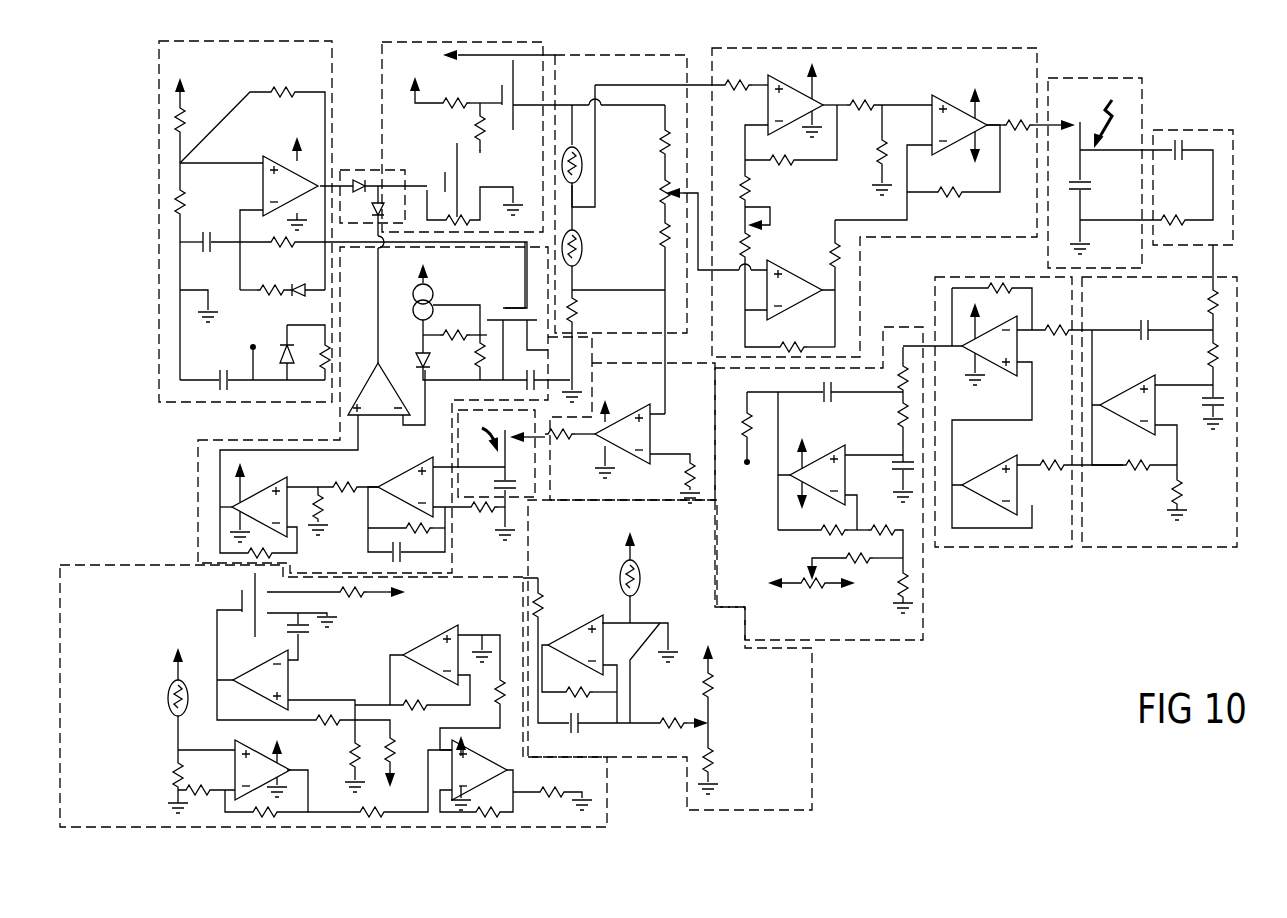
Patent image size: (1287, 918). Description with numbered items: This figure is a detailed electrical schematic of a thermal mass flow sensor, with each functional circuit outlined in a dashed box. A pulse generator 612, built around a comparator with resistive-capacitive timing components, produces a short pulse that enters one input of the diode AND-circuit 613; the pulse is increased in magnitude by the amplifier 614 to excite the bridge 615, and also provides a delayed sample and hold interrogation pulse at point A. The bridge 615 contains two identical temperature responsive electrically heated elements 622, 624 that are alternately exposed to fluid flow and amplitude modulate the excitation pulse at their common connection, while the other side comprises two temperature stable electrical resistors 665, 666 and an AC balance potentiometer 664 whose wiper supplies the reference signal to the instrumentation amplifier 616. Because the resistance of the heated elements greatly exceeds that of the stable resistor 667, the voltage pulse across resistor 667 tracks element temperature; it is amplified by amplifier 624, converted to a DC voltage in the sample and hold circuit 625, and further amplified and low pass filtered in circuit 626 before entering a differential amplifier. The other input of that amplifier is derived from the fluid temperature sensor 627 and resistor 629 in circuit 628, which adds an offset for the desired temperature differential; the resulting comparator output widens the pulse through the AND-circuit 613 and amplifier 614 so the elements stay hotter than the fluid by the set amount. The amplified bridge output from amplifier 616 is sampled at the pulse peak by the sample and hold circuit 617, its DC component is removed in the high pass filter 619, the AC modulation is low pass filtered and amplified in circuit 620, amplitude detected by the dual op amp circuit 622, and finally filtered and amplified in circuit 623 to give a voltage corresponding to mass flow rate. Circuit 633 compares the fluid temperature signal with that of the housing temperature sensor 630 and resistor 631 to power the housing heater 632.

The pulse generator 612 is at (160, 385).
The diode AND-circuit 613 is at (347, 172).
The amplifier 614 is at (405, 108).
The bridge 615 is at (622, 55).
The amplifier 616 is at (863, 48).
The sample and hold circuit 617 is at (1078, 78).
The high pass filter 619 is at (1203, 130).
The low pass filter and amplifier circuit 620 is at (1190, 547).
The temperature responsive electrically heated element 622 is at (582, 152).
The output low pass filter and amplifier circuit 623 is at (924, 627).
The temperature responsive electrically heated element 624 is at (582, 255).
The sample and hold circuit 625 is at (535, 497).
The amplifier and low pass filter circuit 626 is at (243, 440).
The fluid temperature sensor 627 is at (617, 588).
The temperature differential circuit 628 is at (813, 768).
The resistor 629 is at (672, 650).
The housing temperature sensor 630 is at (172, 686).
The resistor 631 is at (172, 772).
The heater 632 is at (355, 598).
The housing temperature control circuit 633 is at (608, 800).
The AC balance potentiometer 664 is at (665, 185).
The temperature stable electrical resistor 665 is at (665, 132).
The temperature stable electrical resistor 666 is at (665, 245).
The stable resistor 667 is at (580, 310).